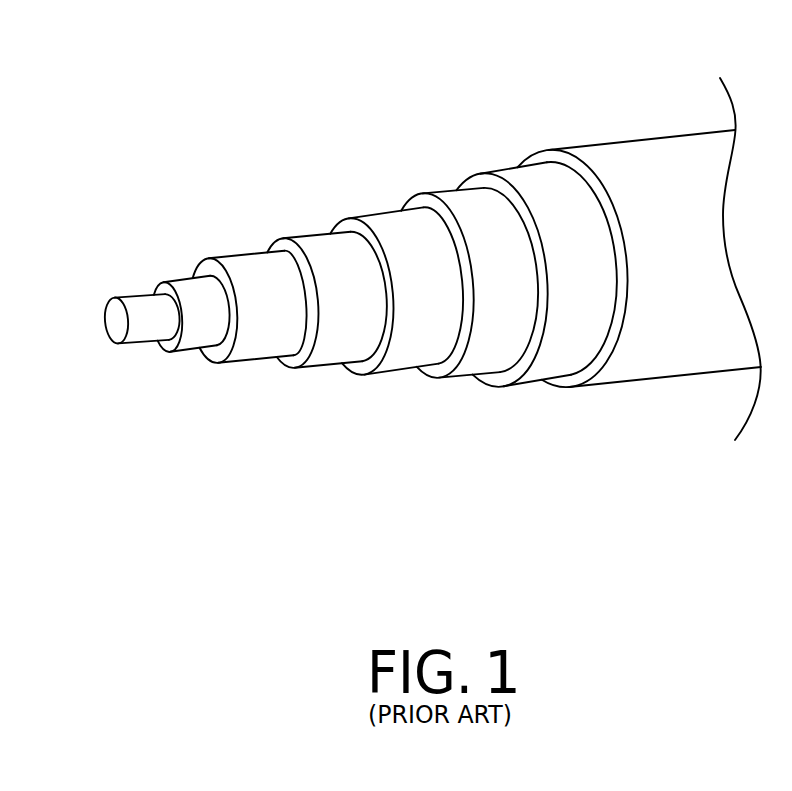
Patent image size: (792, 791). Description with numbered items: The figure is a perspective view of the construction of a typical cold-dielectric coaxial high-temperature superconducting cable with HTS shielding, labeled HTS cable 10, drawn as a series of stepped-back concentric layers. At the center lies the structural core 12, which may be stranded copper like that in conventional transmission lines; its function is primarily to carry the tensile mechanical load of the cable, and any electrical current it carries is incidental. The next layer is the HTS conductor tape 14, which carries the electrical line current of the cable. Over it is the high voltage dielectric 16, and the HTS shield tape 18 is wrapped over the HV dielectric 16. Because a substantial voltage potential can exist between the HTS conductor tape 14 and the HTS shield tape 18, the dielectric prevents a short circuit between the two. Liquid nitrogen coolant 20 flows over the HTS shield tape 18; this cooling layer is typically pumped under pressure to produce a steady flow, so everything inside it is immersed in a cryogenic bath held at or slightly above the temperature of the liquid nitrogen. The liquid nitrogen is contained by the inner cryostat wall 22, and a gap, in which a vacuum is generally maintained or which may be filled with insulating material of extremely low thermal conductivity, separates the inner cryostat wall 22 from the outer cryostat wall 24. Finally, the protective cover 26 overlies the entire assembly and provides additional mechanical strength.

The HTS cable 10 is at (370, 475).
The structural core 12 is at (148, 310).
The HTS conductor tape 14 is at (205, 318).
The HV dielectric 16 is at (262, 280).
The HTS shield tape 18 is at (350, 335).
The liquid nitrogen coolant 20 is at (408, 241).
The inner cryostat wall 22 is at (495, 347).
The outer cryostat wall 24 is at (553, 193).
The protective cover 26 is at (647, 188).